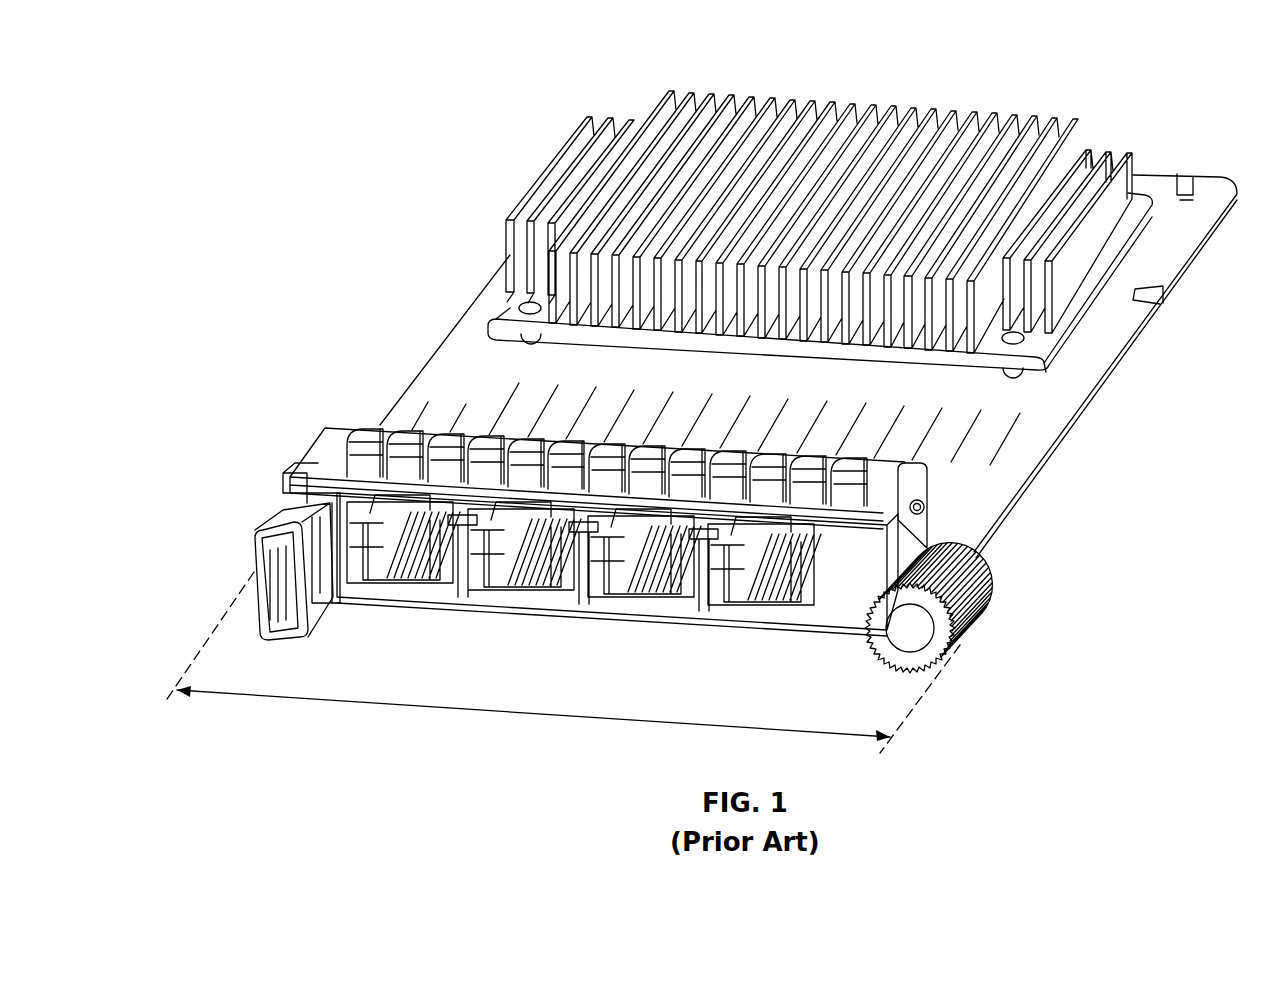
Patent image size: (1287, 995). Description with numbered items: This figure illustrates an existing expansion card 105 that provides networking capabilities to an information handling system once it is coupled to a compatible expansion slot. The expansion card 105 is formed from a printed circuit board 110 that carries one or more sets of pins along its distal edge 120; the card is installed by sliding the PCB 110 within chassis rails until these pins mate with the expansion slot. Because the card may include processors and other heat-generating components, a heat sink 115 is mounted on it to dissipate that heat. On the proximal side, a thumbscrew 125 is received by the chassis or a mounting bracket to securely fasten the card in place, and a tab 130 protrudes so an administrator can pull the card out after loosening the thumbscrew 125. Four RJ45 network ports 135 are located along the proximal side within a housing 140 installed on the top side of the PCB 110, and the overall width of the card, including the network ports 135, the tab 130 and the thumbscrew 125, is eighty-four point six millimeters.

The expansion card 105 is at (506, 136).
The printed circuit board 110 is at (1057, 383).
The heat sink 115 is at (912, 146).
The distal edge 120 is at (1181, 172).
The thumbscrew 125 is at (960, 637).
The tab 130 is at (252, 572).
The RJ45 network ports 135 is at (405, 586).
The housing 140 is at (296, 455).